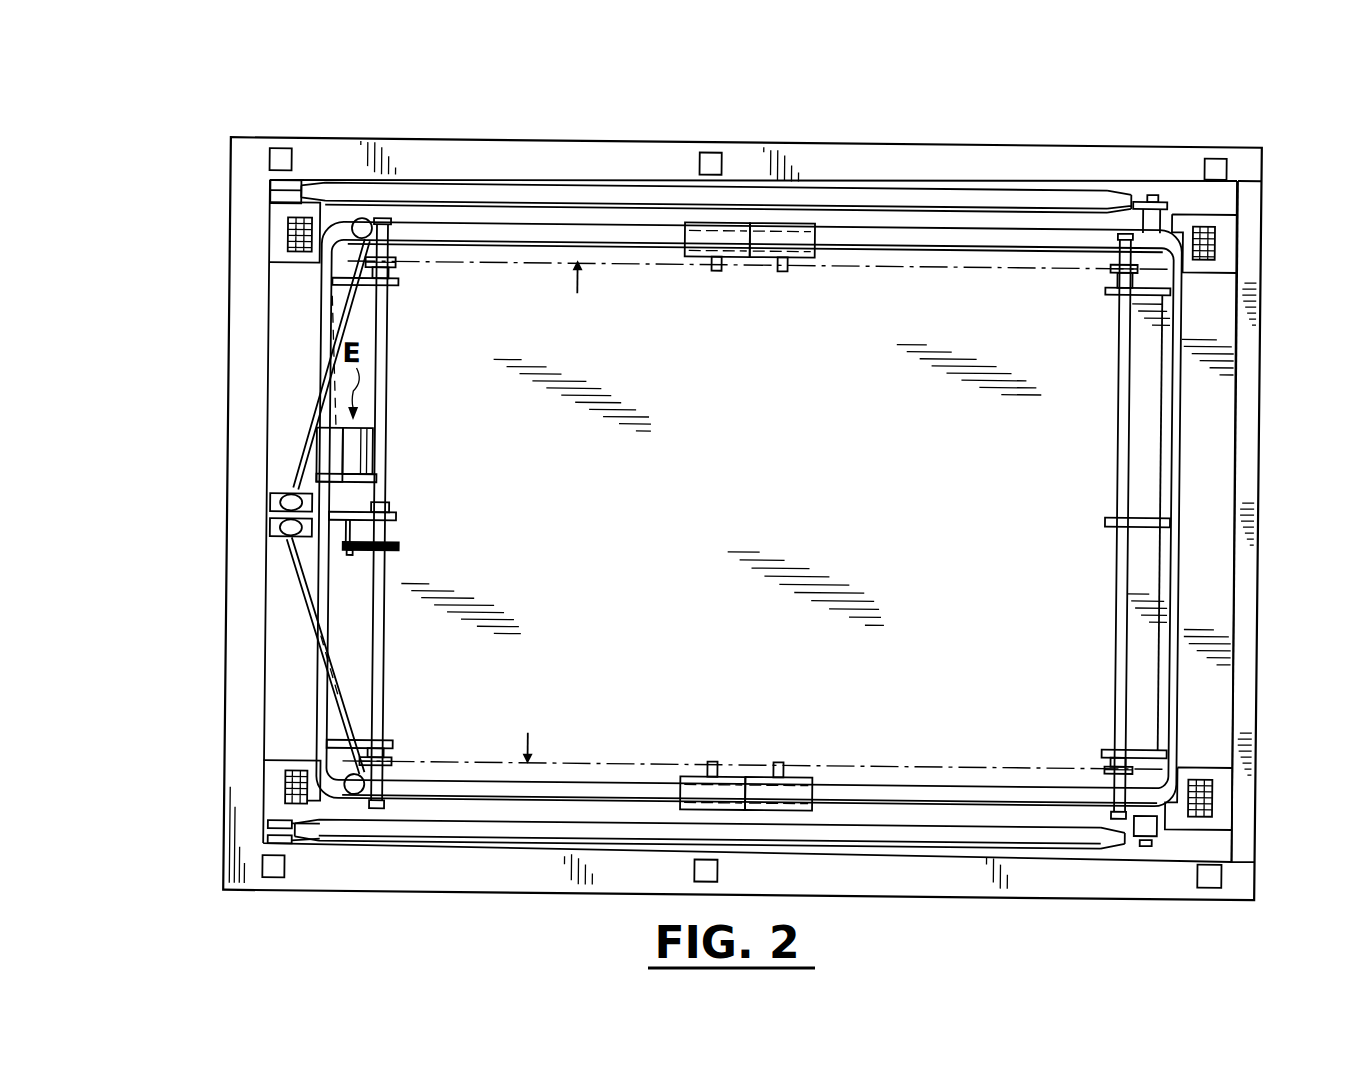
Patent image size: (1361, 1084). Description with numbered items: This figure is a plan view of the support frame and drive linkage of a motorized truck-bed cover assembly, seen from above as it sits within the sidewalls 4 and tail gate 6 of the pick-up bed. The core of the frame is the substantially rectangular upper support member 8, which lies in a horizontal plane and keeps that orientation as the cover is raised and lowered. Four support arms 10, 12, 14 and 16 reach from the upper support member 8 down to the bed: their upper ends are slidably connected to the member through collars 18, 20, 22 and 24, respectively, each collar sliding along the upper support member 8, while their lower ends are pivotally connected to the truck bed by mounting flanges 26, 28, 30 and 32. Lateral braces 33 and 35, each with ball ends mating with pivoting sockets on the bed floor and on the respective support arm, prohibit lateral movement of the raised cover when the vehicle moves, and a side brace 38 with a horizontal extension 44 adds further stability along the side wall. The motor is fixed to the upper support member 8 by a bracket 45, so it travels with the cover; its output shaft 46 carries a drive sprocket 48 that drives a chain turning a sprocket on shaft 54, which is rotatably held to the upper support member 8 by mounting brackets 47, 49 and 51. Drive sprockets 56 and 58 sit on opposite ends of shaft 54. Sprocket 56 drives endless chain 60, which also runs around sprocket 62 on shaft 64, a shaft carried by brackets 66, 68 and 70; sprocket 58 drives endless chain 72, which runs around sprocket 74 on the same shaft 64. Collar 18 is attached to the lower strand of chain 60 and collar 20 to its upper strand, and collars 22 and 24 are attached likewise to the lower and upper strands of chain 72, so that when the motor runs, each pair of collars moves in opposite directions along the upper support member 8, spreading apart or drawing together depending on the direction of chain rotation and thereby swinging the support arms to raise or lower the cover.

The sidewalls 4 is at (961, 138).
The tail gate 6 is at (1255, 510).
The upper support member 8 is at (1179, 446).
The support arm 10 is at (328, 852).
The support arm 12 is at (1163, 841).
The support arm 14 is at (297, 186).
The support arm 16 is at (1192, 215).
The collar 18 is at (693, 779).
The collar 20 is at (788, 778).
The collar 22 is at (702, 258).
The collar 24 is at (787, 258).
The mounting flange 26 is at (283, 787).
The mounting flange 28 is at (1223, 785).
The mounting flange 30 is at (282, 237).
The mounting flange 32 is at (1229, 232).
The lateral brace 33 is at (291, 610).
The lateral brace 35 is at (316, 432).
The brace 38 is at (548, 850).
The horizontal extension 44 is at (457, 188).
The bracket 45 is at (349, 449).
The output shaft 46 is at (400, 552).
The mounting bracket 47 is at (392, 746).
The drive sprocket 48 is at (348, 552).
The mounting bracket 49 is at (396, 524).
The mounting bracket 51 is at (391, 291).
The shaft 54 is at (384, 399).
The drive sprocket 56 is at (398, 766).
The drive sprocket 58 is at (392, 274).
The endless chain 60 is at (530, 735).
The sprocket 62 is at (1108, 764).
The shaft 64 is at (1117, 608).
The bracket 66 is at (1107, 746).
The bracket 68 is at (1105, 518).
The bracket 70 is at (1108, 291).
The endless chain 72 is at (563, 300).
The sprocket 74 is at (1110, 266).